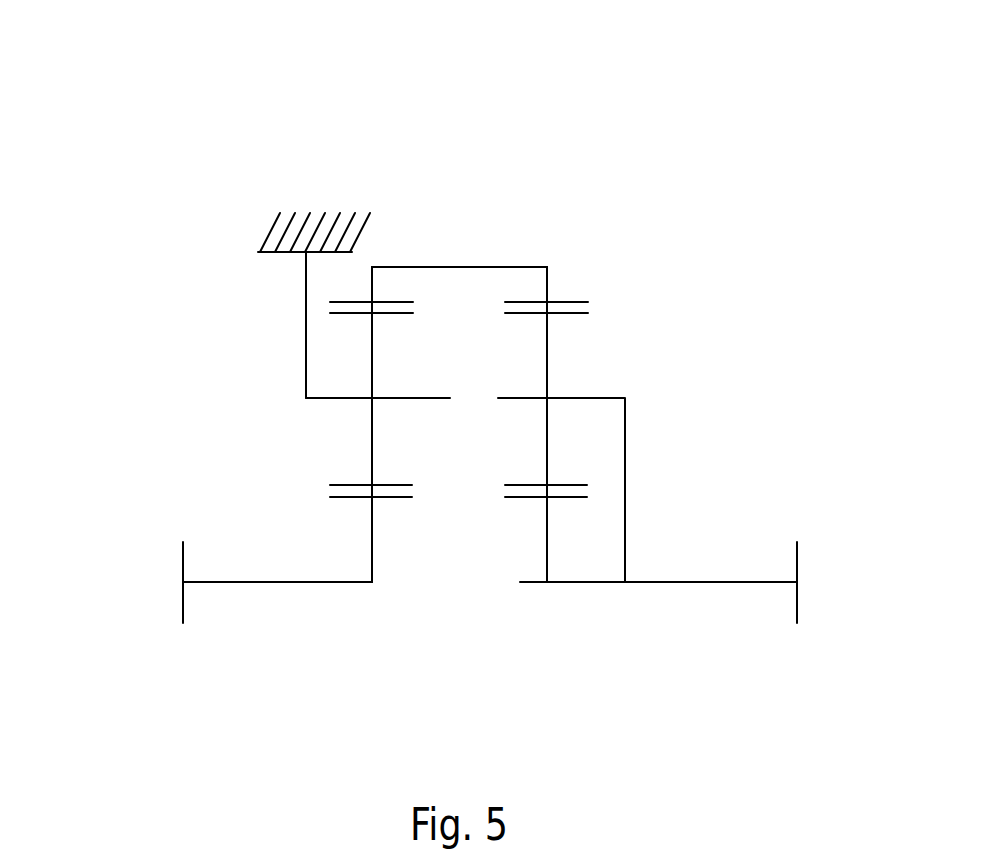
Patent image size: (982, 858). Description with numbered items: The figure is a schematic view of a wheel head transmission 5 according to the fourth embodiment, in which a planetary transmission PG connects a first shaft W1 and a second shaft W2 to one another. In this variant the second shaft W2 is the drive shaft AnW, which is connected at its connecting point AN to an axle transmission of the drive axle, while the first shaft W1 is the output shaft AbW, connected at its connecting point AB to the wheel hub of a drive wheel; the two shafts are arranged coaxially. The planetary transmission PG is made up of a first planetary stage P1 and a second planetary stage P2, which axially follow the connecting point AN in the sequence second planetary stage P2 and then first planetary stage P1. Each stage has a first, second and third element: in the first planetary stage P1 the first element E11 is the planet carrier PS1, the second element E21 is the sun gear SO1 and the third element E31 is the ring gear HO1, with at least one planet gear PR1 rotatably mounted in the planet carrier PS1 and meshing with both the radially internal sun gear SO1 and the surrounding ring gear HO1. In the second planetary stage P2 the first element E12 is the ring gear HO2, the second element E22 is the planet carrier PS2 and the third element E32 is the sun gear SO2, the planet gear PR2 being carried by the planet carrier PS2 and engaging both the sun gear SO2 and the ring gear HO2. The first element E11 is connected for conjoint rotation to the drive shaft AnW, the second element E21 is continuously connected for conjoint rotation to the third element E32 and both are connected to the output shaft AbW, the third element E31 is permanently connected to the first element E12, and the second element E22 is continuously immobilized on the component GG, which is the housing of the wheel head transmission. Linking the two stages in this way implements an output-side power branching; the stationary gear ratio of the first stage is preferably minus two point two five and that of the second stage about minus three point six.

The wheel head transmission 5 is at (121, 146).
The planetary transmission PG is at (454, 104).
The first planetary stage P1 is at (558, 188).
The second planetary stage P2 is at (378, 188).
The component for conjoint rotation GG is at (304, 230).
The ring gear of the first planetary stage HO1 is at (546, 293).
The ring gear of the second planetary stage HO2 is at (373, 290).
The planet carrier of the first planetary stage PS1 is at (552, 398).
The planet carrier of the second planetary stage PS2 is at (343, 398).
The planet gear of the first planetary stage PR1 is at (547, 452).
The planet gear of the second planetary stage PR2 is at (372, 465).
The sun gear of the first planetary stage SO1 is at (547, 530).
The sun gear of the second planetary stage SO2 is at (372, 530).
The first element of the first planetary stage E11 is at (573, 398).
The first element of the second planetary stage E12 is at (373, 291).
The second element of the first planetary stage E21 is at (547, 552).
The second element of the second planetary stage E22 is at (325, 398).
The third element of the first planetary stage E31 is at (548, 285).
The third element of the second planetary stage E32 is at (372, 552).
The connecting point of the drive shaft AN is at (165, 530).
The connecting point of the output shaft AB is at (816, 530).
The drive shaft AnW is at (243, 582).
The output shaft AbW is at (770, 582).
The first shaft W1 is at (720, 582).
The second shaft W2 is at (225, 582).